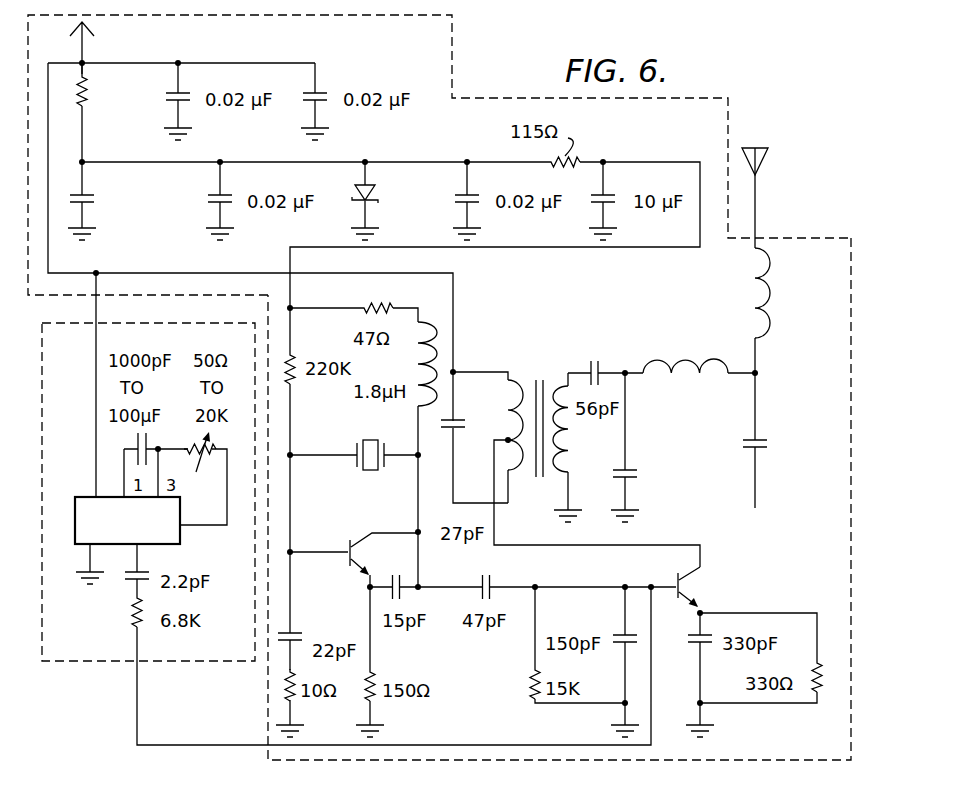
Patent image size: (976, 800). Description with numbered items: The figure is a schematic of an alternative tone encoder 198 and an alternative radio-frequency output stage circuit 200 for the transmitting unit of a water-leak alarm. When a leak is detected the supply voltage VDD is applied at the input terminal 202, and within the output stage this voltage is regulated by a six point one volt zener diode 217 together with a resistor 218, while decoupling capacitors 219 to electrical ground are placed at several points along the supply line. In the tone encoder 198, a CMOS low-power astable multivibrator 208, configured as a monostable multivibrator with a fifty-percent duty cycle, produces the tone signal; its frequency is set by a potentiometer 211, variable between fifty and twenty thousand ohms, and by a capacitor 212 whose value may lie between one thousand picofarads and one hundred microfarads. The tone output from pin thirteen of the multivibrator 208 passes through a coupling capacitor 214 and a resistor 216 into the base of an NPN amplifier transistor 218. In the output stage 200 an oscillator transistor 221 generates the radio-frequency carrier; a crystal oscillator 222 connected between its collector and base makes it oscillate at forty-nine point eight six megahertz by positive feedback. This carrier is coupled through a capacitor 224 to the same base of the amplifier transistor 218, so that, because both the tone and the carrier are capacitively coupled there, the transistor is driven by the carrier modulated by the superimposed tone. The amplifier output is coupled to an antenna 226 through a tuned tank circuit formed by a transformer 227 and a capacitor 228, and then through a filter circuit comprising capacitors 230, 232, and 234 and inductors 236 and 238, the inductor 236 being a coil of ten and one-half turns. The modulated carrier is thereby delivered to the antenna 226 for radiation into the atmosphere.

The alternative tone encoder 198 is at (90, 663).
The alternative radio-frequency output stage circuit 200 is at (268, 700).
The input terminal 202 is at (78, 45).
The multivibrator 208 is at (75, 526).
The potentiometer 211 is at (202, 473).
The capacitor 212 is at (135, 441).
The coupling capacitor 214 is at (133, 584).
The resistor 216 is at (133, 620).
The zener diode 217 is at (372, 183).
The amplifier transistor 218 is at (88, 108).
The decoupling capacitors 219 is at (185, 232).
The oscillator transistor 221 is at (358, 572).
The crystal oscillator 222 is at (368, 472).
The capacitor 224 is at (478, 598).
The antenna 226 is at (758, 176).
The transformer 227 is at (566, 382).
The capacitor 228 is at (462, 420).
The capacitor 230 is at (600, 365).
The capacitor 232 is at (630, 468).
The capacitor 234 is at (766, 440).
The inductor 236 is at (680, 357).
The inductor 238 is at (768, 308).